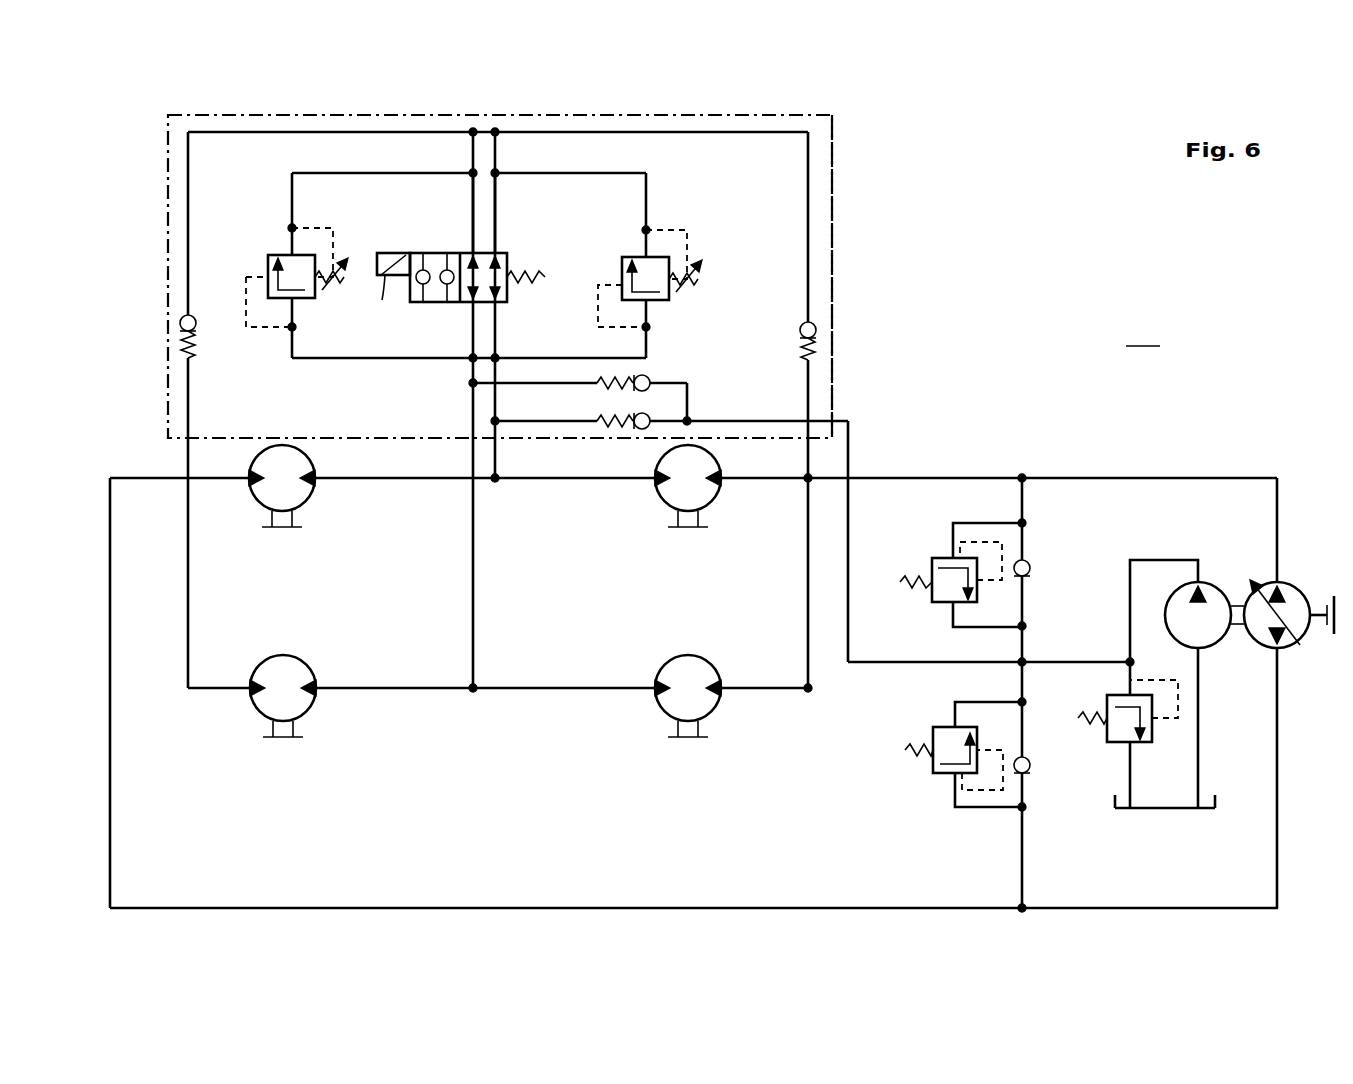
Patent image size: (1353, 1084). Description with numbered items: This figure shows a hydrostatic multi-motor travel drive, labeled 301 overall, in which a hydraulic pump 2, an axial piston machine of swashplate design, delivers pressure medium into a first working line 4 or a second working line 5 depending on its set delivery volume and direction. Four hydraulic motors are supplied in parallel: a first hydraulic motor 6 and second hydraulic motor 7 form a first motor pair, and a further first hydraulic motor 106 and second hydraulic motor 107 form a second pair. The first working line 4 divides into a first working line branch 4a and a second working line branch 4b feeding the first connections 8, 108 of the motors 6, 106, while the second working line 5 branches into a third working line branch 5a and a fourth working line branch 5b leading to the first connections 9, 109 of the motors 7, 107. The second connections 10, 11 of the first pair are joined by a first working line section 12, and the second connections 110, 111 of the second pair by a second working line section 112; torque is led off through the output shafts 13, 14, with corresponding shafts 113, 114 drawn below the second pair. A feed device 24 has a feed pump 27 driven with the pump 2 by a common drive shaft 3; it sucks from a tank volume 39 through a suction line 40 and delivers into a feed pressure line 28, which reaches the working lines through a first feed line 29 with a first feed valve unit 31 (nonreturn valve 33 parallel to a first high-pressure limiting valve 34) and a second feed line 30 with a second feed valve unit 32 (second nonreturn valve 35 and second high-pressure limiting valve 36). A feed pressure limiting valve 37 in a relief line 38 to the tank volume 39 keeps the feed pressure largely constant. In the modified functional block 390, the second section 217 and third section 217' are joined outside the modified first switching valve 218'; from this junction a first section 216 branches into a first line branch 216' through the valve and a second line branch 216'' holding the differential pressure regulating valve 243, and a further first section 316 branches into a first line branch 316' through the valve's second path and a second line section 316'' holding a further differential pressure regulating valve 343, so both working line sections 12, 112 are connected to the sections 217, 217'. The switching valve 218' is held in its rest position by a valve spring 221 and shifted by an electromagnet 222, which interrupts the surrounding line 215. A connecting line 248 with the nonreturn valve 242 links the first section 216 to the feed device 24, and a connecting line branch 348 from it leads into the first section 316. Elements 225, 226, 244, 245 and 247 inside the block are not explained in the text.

The hydraulic pump 2 is at (1297, 598).
The drive shaft 3 is at (1327, 627).
The first working line 4 is at (1077, 478).
The first working line branch 4a is at (783, 480).
The second working line branch 4b is at (808, 605).
The second working line 5 is at (1148, 906).
The third working line branch 5a is at (205, 478).
The fourth working line branch 5b is at (188, 590).
The first hydraulic motor 6 is at (685, 512).
The second hydraulic motor 7 is at (285, 512).
The first connection 8 is at (719, 481).
The first connection 9 is at (252, 481).
The second connection 10 is at (658, 481).
The second connection 11 is at (313, 481).
The first working line section 12 is at (413, 480).
The output shaft 13 is at (690, 530).
The output shaft 14 is at (283, 530).
The feed device 24 is at (1195, 500).
The feed pump 27 is at (1212, 636).
The feed pressure line 28 is at (1162, 558).
The first feed line 29 is at (1022, 502).
The second feed line 30 is at (1024, 860).
The first feed valve unit 31 is at (938, 580).
The second feed valve unit 32 is at (953, 781).
The nonreturn valve 33 is at (1032, 566).
The first high-pressure limiting valve 34 is at (934, 572).
The second nonreturn valve 35 is at (1032, 768).
The second high-pressure limiting valve 36 is at (935, 768).
The feed pressure limiting valve 37 is at (1110, 735).
The relief line 38 is at (1135, 777).
The tank volume 39 is at (1208, 812).
The suction line 40 is at (1200, 744).
The first hydraulic motor 106 is at (693, 725).
The second hydraulic motor 107 is at (287, 725).
The first connection 108 is at (719, 691).
The first connection 109 is at (252, 691).
The second connection 110 is at (658, 691).
The second connection 111 is at (318, 691).
The second working line section 112 is at (427, 690).
The motor output shaft 113 is at (690, 740).
The motor output shaft 114 is at (284, 740).
The surrounding line 215 is at (150, 170).
The first section 216 is at (532, 305).
The first line branch 216' is at (533, 213).
The second line branch 216'' is at (612, 215).
The second section 217 is at (155, 223).
The third section 217' is at (848, 227).
The modified first switching valve 218' is at (432, 258).
The valve spring 221 is at (535, 274).
The electromagnet 222 is at (395, 294).
The check valve 225 is at (178, 326).
The check valve 226 is at (800, 332).
The nonreturn valve 242 is at (640, 430).
The differential pressure regulating valve 243 is at (655, 300).
The adjustable valve spring 244 is at (697, 290).
The control pressure line 245 is at (598, 316).
The control pressure line 247 is at (690, 246).
The connecting line 248 is at (876, 664).
The hydraulic drive system 301 is at (1146, 334).
The further first section 316 is at (439, 410).
The first line branch 316' is at (439, 213).
The second line section 316'' is at (345, 214).
The further differential pressure regulating valve 343 is at (305, 295).
The connecting line branch 348 is at (660, 424).
The modified functional block 390 is at (836, 133).